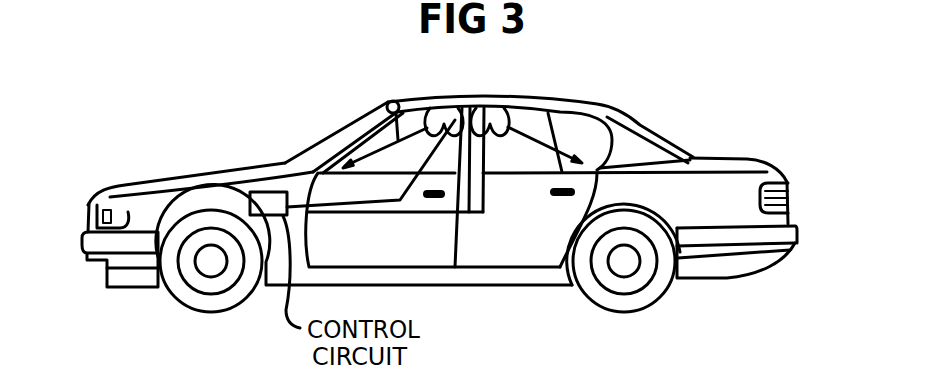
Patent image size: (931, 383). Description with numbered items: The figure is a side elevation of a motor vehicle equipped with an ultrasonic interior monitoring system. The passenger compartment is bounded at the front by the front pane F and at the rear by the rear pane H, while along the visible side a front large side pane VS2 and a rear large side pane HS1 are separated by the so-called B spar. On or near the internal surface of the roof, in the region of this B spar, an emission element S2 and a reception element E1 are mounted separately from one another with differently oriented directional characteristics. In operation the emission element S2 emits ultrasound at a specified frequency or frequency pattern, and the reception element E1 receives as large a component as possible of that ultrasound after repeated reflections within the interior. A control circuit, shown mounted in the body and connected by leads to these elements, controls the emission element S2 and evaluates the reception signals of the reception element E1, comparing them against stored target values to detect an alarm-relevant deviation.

The front pane F is at (334, 147).
The side pane VS2 is at (393, 101).
The reception element E1 is at (430, 107).
The emission element S2 is at (493, 107).
The side pane HS1 is at (534, 127).
The rear pane H is at (655, 138).